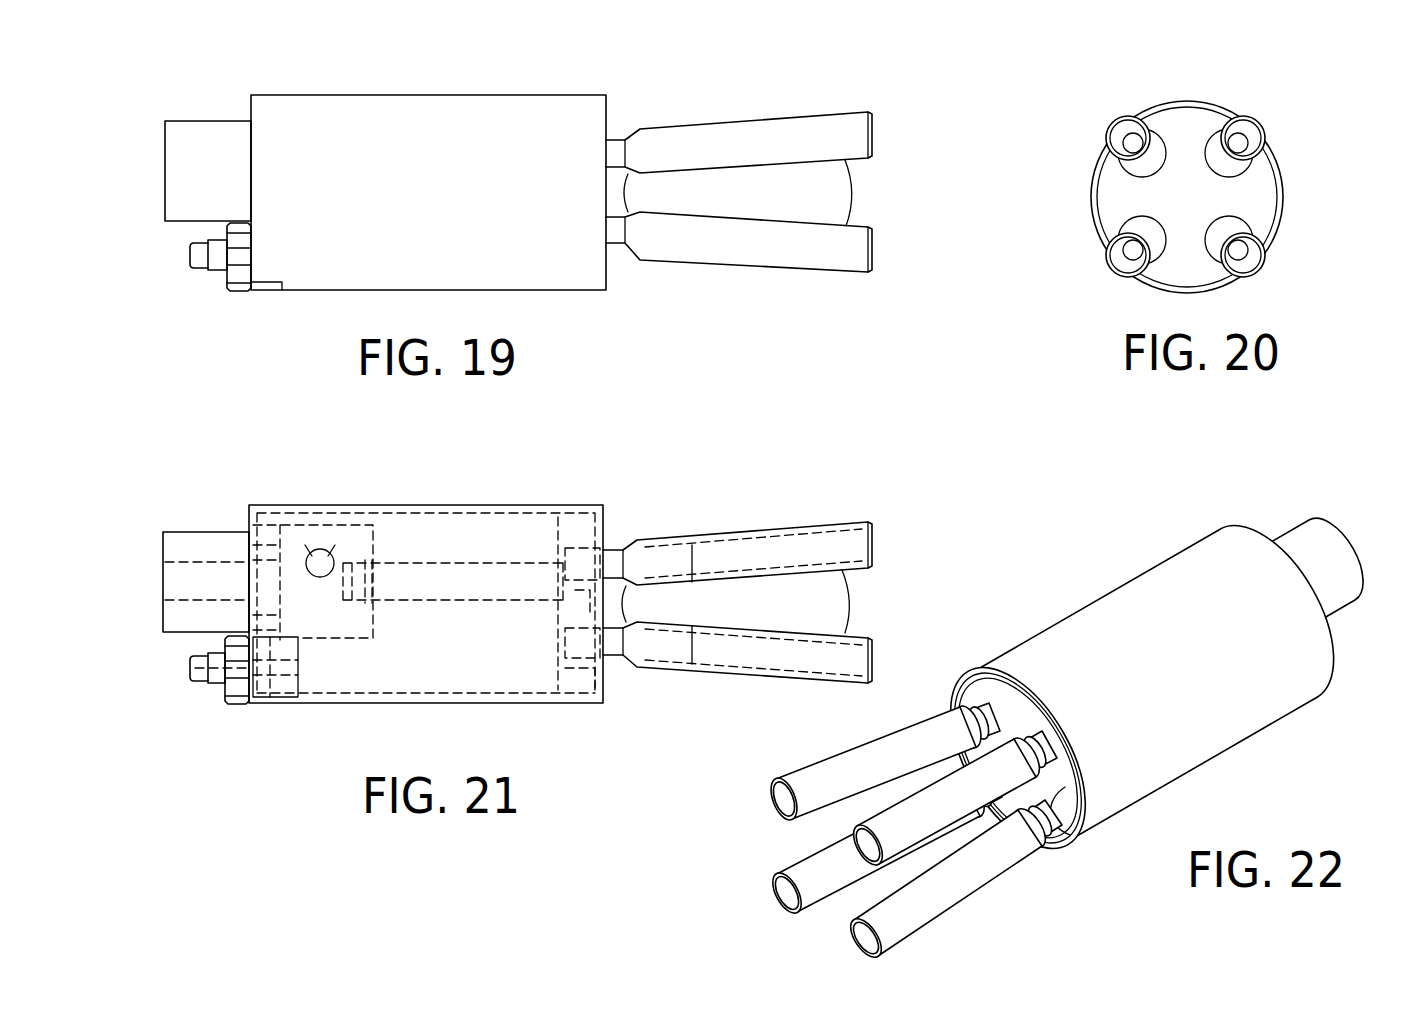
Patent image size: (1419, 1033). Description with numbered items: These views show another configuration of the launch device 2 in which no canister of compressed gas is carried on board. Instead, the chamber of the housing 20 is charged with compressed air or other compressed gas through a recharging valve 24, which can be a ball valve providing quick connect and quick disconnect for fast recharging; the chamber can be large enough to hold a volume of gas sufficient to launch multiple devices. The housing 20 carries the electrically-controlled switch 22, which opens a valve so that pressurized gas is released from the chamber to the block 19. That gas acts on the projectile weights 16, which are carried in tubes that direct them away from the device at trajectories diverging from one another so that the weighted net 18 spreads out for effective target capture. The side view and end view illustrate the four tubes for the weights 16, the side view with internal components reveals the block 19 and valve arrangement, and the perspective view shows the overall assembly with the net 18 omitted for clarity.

In FIG. 19, the launch device 2 is at (640, 108).
In FIG. 20, the launch device 2 is at (1300, 133).
In FIG. 21, the launch device 2 is at (640, 495).
In FIG. 22, the launch device 2 is at (1125, 533).
In FIG. 19, the projectile weights 16 is at (798, 135).
In FIG. 20, the projectile weights 16 is at (1118, 240).
In FIG. 21, the projectile weights 16 is at (803, 530).
In FIG. 22, the projectile weights 16 is at (785, 873).
In FIG. 19, the weighted net 18 is at (891, 193).
In FIG. 21, the weighted net 18 is at (887, 601).
In FIG. 20, the block 19 is at (1173, 128).
In FIG. 21, the block 19 is at (607, 673).
In FIG. 22, the block 19 is at (1073, 837).
In FIG. 19, the housing 20 is at (546, 93).
In FIG. 20, the housing 20 is at (1200, 98).
In FIG. 21, the housing 20 is at (472, 503).
In FIG. 22, the housing 20 is at (1153, 583).
In FIG. 19, the electrically-controlled switch 22 is at (222, 125).
In FIG. 21, the electrically-controlled switch 22 is at (228, 538).
In FIG. 22, the electrically-controlled switch 22 is at (1292, 537).
In FIG. 19, the recharging valve 24 is at (220, 265).
In FIG. 21, the recharging valve 24 is at (212, 677).